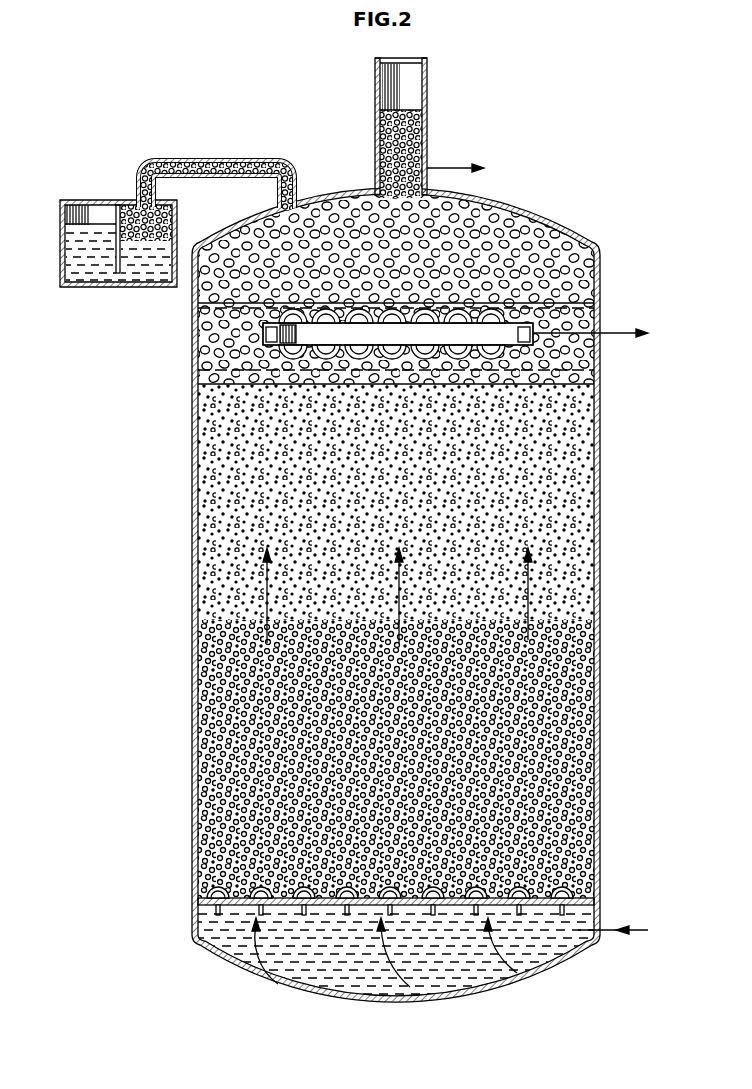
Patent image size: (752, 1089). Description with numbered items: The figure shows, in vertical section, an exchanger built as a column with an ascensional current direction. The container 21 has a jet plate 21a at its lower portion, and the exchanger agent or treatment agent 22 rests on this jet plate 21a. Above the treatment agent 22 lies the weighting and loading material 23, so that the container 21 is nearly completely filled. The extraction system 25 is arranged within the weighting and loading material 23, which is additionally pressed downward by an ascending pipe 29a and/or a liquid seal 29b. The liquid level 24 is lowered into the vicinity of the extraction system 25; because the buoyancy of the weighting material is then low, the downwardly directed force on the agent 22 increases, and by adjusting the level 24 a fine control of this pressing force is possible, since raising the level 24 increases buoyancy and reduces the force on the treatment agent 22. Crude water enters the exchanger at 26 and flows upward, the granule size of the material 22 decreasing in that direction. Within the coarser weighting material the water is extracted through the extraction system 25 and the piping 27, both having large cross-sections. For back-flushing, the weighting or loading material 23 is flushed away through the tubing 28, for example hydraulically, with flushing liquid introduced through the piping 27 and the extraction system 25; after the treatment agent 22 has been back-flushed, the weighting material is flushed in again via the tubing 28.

The container 21 is at (597, 603).
The jet plate 21a is at (543, 898).
The exchanger agent 22 is at (577, 522).
The weighting and loading material 23 is at (264, 345).
The liquid level 24 is at (222, 305).
The extraction system 25 is at (258, 350).
The crude water inlet 26 is at (648, 928).
The piping 27 is at (614, 331).
The tubing 28 is at (433, 128).
The ascending pipe 29a is at (418, 93).
The liquid seal 29b is at (272, 157).